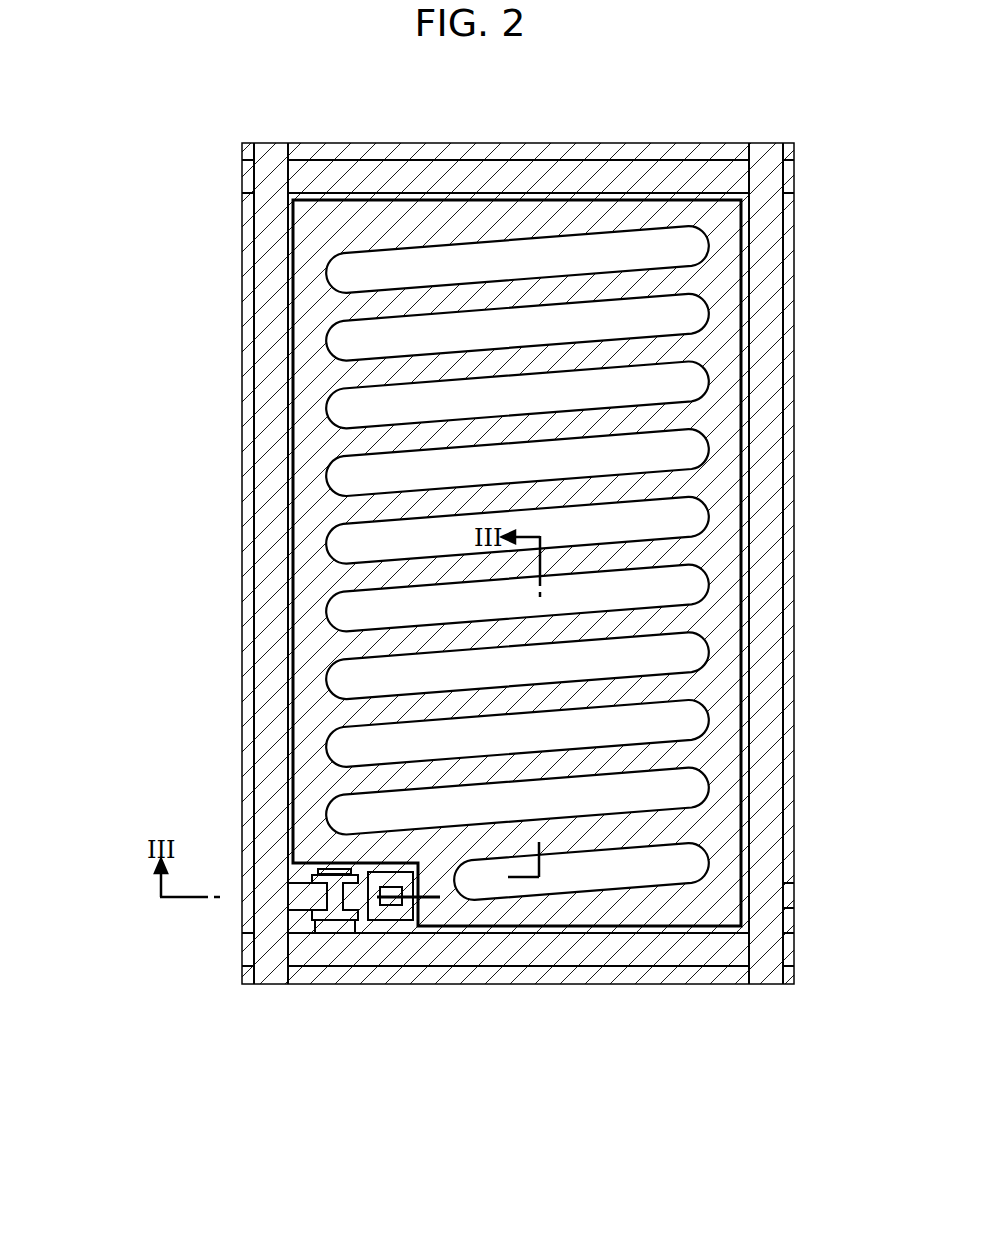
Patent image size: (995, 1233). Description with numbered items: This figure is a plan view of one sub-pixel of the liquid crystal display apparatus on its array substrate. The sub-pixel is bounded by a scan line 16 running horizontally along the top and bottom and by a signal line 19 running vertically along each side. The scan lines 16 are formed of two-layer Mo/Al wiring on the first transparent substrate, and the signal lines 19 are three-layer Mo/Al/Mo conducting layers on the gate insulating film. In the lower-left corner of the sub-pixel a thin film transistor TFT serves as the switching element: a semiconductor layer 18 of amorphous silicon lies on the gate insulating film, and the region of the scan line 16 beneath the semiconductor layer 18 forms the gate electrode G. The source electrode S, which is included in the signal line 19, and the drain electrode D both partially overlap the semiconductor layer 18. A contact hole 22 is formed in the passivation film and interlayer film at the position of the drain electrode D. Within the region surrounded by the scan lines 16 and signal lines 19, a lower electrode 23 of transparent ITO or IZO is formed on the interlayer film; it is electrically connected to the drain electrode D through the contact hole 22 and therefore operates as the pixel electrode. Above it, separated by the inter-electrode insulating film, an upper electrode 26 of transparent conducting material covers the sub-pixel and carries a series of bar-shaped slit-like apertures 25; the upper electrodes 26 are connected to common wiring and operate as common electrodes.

The scan line 16 is at (602, 177).
The signal line 19 is at (265, 384).
The lower electrode 23 is at (297, 628).
The slit-like aperture 25 is at (660, 243).
The upper electrode 26 is at (308, 307).
The semiconductor layer 18 is at (303, 868).
The thin film transistor TFT is at (303, 871).
The source electrode S is at (302, 891).
The gate electrode G is at (330, 928).
The drain electrode D is at (358, 902).
The contact hole 22 is at (395, 902).